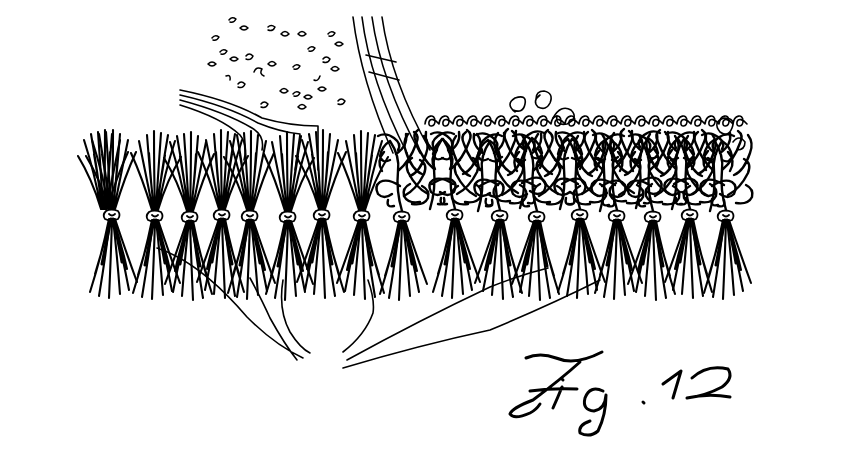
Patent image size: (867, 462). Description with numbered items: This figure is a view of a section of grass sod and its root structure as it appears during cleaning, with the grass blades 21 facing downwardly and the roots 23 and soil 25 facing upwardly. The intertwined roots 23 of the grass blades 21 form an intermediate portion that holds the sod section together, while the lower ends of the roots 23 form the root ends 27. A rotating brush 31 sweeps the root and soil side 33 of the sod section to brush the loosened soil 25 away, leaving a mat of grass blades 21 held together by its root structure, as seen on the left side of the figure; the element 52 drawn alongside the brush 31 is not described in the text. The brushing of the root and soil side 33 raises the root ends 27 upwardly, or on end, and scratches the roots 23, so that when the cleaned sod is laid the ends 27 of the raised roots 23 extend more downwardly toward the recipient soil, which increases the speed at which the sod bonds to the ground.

The grass blades 21 is at (420, 294).
The roots 23 is at (200, 187).
The soil 25 is at (207, 48).
The root ends 27 is at (232, 121).
The rotating brush 31 is at (373, 56).
The root and soil side 33 is at (487, 122).
The marking lines 52 is at (378, 82).